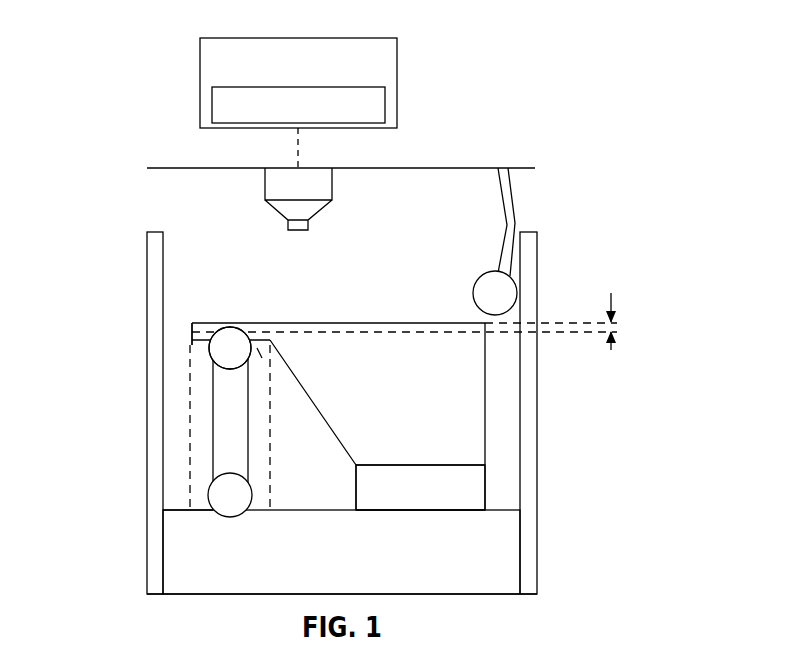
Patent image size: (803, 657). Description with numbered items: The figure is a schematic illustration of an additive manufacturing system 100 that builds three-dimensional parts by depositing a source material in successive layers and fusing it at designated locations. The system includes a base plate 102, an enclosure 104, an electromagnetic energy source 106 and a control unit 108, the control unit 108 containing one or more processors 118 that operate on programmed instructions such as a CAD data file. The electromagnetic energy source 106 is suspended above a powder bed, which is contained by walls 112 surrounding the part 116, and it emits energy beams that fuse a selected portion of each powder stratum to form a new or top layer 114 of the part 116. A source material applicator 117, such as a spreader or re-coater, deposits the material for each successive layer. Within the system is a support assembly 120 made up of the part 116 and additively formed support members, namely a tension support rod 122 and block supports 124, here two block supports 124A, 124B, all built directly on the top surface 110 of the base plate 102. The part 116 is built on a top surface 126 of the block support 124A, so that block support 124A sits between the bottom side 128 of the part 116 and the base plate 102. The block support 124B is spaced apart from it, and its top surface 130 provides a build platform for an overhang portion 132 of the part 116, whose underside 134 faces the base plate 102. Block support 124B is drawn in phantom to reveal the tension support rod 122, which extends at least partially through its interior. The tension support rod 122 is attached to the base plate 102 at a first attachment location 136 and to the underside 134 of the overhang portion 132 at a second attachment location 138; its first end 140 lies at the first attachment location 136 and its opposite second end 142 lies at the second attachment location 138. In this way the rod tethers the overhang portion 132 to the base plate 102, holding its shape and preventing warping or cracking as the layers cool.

The additive manufacturing system 100 is at (130, 103).
The base plate 102 is at (190, 575).
The enclosure 104 is at (147, 226).
The electromagnetic energy source 106 is at (310, 180).
The control unit 108 is at (378, 38).
The top surface 110 is at (175, 507).
The walls 112 is at (152, 272).
The top layer 114 is at (612, 303).
The part 116 is at (460, 382).
The source material applicator 117 is at (518, 230).
The processors 118 is at (380, 108).
The support assembly 120 is at (230, 292).
The tension support rod 122 is at (225, 443).
The block supports 124 is at (475, 478).
The block support 124A is at (473, 497).
The block support 124B is at (190, 380).
The top surface 126 is at (445, 463).
The bottom side 128 is at (366, 468).
The top surface 130 is at (270, 335).
The overhang portion 132 is at (243, 322).
The underside 134 is at (205, 343).
The first attachment location 136 is at (260, 502).
The second attachment location 138 is at (257, 348).
The first end 140 is at (232, 508).
The second end 142 is at (230, 345).